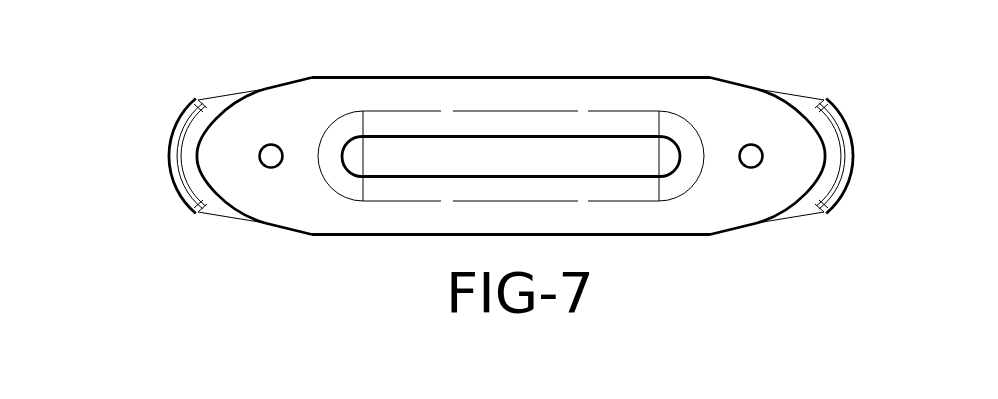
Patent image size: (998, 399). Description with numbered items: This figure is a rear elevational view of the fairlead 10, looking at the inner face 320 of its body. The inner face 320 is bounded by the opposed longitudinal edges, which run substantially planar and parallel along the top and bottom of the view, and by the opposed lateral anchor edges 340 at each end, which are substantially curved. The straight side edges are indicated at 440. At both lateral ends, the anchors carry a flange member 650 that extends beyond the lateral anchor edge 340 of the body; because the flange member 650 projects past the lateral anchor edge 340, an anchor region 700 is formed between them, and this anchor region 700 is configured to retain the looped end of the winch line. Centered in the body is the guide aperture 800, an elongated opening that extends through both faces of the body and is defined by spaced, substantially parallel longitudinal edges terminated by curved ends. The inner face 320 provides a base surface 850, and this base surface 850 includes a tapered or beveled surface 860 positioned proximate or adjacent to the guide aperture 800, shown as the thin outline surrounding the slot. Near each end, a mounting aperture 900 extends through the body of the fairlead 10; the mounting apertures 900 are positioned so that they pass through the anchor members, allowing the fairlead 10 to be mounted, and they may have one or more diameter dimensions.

The fairlead 10 is at (866, 89).
The inner face 320 is at (703, 207).
The lateral anchor edges 340 is at (200, 175).
The straight side edge 440 is at (391, 78).
The flange member 650 is at (192, 145).
The anchor region 700 is at (211, 103).
The guide aperture 800 is at (615, 177).
The base surface 850 is at (773, 187).
The tapered or beveled surface 860 is at (338, 175).
The mounting apertures 900 is at (273, 152).